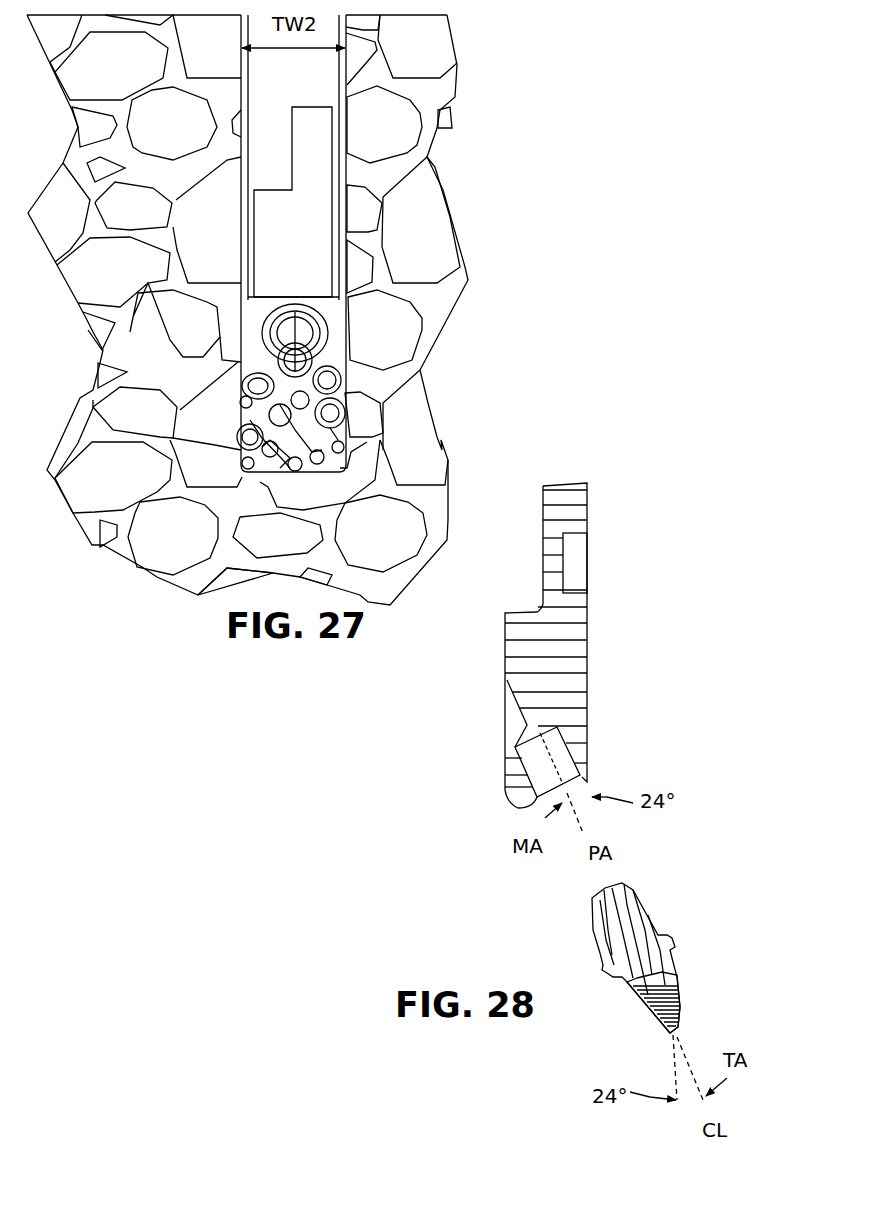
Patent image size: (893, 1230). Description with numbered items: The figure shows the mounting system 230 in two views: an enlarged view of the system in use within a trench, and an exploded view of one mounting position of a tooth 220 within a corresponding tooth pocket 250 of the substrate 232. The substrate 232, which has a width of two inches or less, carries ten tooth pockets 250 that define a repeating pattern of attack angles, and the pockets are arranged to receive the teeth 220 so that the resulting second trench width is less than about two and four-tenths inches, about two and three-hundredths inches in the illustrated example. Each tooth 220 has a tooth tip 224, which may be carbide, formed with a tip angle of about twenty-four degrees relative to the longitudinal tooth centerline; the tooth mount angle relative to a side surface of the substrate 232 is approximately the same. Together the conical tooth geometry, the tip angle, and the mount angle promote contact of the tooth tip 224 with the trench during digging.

In FIG. 27, the tooth 220 is at (340, 415).
In FIG. 28, the tooth 220 is at (690, 942).
In FIG. 28, the tooth tip 224 is at (675, 1007).
In FIG. 27, the mounting system 230 is at (325, 312).
In FIG. 28, the substrate 232 is at (595, 633).
In FIG. 28, the tooth pocket 250 is at (594, 745).